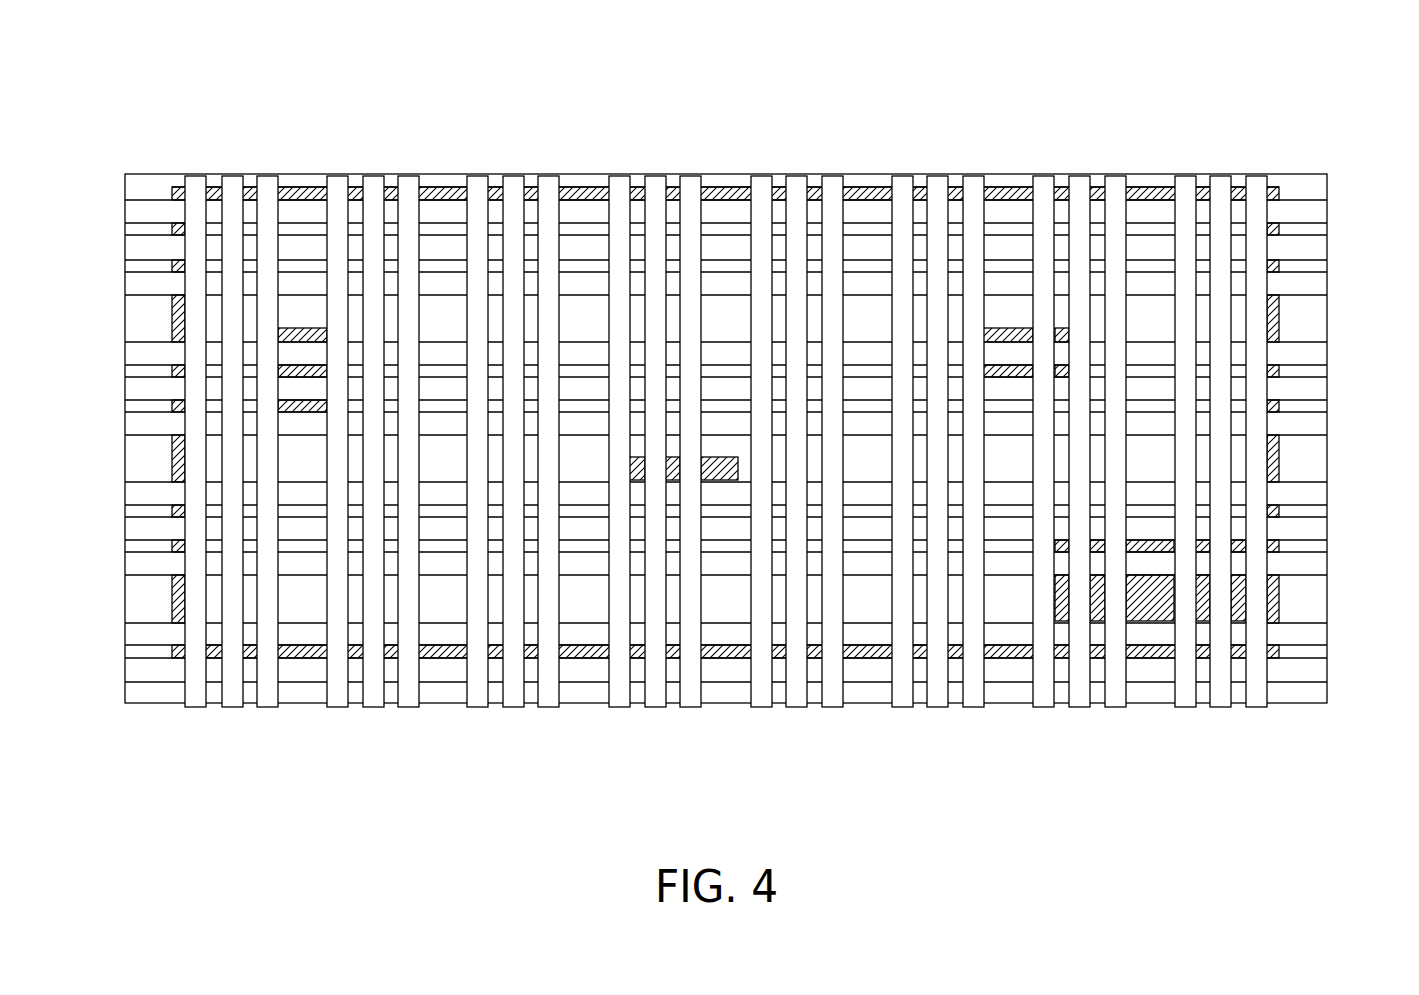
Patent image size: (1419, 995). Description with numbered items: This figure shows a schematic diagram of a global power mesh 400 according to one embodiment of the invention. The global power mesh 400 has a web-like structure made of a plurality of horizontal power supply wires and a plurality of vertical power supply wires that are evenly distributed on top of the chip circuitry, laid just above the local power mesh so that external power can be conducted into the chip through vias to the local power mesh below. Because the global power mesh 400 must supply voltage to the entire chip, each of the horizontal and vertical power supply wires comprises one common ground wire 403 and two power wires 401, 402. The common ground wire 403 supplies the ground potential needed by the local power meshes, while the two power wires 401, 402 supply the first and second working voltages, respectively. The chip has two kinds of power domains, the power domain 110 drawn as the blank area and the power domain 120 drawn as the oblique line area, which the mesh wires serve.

The global power mesh 400 is at (1250, 108).
The power domain 110 is at (992, 225).
The power domain 120 is at (580, 187).
The power wire 401 is at (1310, 286).
The power wire 402 is at (1310, 249).
The common ground wire 403 is at (1310, 211).